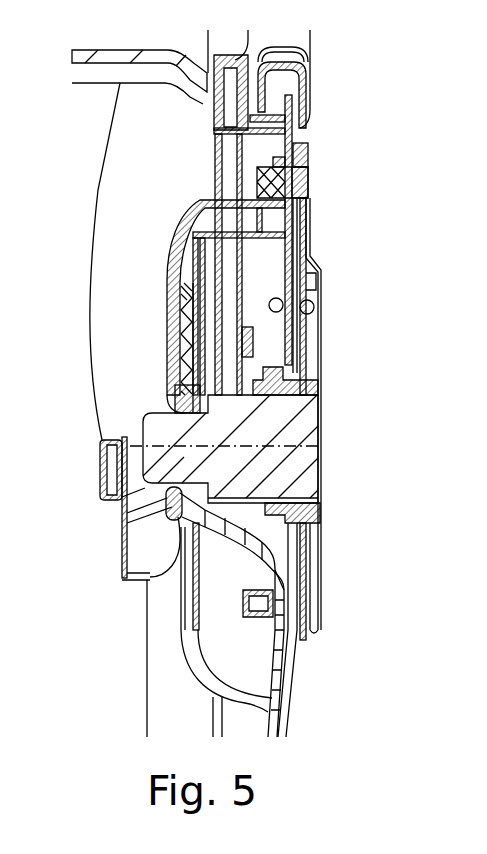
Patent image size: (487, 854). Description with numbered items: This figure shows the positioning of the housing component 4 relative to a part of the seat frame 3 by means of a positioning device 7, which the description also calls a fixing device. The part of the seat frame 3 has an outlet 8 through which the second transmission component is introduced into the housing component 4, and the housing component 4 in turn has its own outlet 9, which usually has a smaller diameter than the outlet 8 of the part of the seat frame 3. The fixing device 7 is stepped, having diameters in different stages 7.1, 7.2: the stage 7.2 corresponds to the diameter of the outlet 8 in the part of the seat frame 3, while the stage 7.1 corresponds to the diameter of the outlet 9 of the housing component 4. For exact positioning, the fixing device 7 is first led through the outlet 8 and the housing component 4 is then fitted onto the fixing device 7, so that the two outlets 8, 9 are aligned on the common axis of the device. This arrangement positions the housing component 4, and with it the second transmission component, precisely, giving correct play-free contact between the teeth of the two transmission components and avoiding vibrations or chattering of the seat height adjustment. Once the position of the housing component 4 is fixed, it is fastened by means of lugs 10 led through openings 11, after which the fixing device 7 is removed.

The part of the seat frame 3 is at (307, 247).
The housing component 4 is at (167, 272).
The positioning device 7 is at (230, 449).
The stage 7.1 is at (178, 393).
The stage 7.2 is at (320, 397).
The outlet 8 is at (277, 443).
The outlet 9 is at (180, 442).
The lugs 10 is at (305, 150).
The openings 11 is at (306, 192).